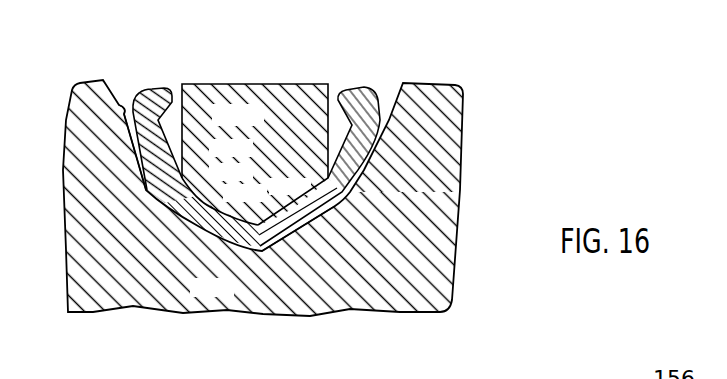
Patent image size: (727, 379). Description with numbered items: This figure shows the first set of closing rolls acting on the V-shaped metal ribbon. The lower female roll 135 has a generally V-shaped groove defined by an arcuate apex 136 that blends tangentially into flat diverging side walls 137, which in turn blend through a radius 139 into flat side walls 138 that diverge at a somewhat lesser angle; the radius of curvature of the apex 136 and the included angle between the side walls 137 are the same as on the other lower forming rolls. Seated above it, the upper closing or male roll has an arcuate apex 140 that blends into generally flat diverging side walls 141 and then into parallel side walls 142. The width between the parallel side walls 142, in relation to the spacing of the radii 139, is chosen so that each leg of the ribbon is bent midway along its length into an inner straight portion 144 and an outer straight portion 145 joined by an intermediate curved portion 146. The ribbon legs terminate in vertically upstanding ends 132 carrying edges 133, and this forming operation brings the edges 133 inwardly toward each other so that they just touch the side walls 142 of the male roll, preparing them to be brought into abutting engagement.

The vertically upstanding ends 132 is at (145, 97).
The edges 133 is at (158, 97).
The lower female roll 135 is at (114, 291).
The arcuate apex 136 is at (262, 253).
The flat diverging side walls 137 is at (196, 227).
The flat side walls 138 is at (120, 113).
The radius 139 is at (162, 205).
The arcuate apex 140 is at (259, 222).
The generally flat diverging side walls 141 is at (206, 203).
The parallel side walls 142 is at (184, 147).
The inner straight portion 144 is at (221, 228).
The outer straight portion 145 is at (155, 176).
The intermediate curved portion 146 is at (178, 190).